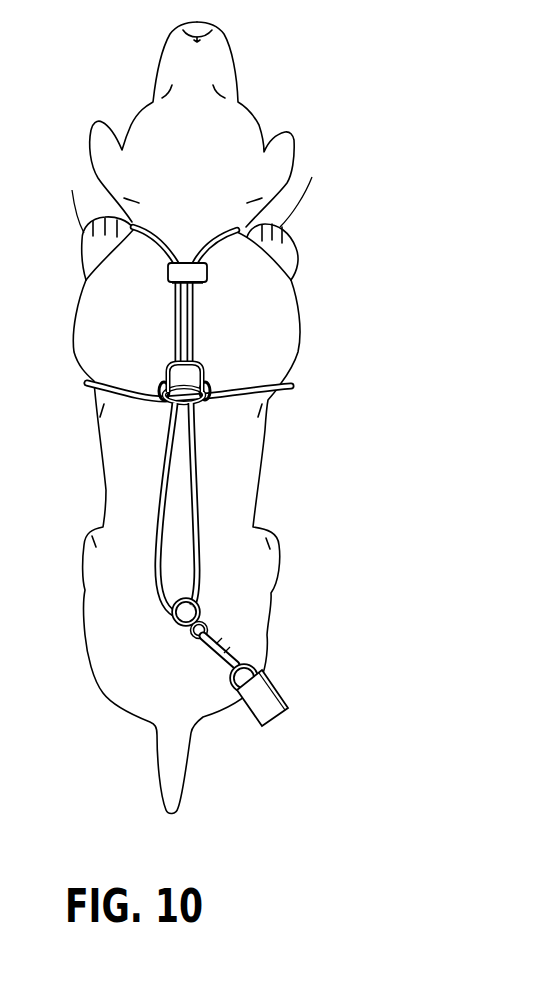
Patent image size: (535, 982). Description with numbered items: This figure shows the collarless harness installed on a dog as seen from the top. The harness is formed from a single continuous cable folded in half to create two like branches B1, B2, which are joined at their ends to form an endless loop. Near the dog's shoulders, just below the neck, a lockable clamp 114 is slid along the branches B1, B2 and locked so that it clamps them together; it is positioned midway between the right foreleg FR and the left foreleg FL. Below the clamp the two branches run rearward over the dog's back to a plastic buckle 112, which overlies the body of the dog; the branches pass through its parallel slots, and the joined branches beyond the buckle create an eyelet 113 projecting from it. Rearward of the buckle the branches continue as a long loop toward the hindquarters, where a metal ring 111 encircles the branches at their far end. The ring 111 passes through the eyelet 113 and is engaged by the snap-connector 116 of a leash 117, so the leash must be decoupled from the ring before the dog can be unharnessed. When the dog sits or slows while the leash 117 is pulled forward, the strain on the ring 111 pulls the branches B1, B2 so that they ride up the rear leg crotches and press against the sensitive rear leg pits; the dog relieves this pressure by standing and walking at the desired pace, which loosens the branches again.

The metal ring 111 is at (200, 609).
The plastic buckle 112 is at (202, 407).
The eyelet 113 is at (202, 366).
The lockable clamp 114 is at (207, 272).
The snap-connector 116 is at (193, 638).
The leash 117 is at (270, 707).
The branch B1 is at (193, 327).
The branch B2 is at (180, 327).
The left foreleg FL is at (72, 194).
The right foreleg FR is at (303, 191).